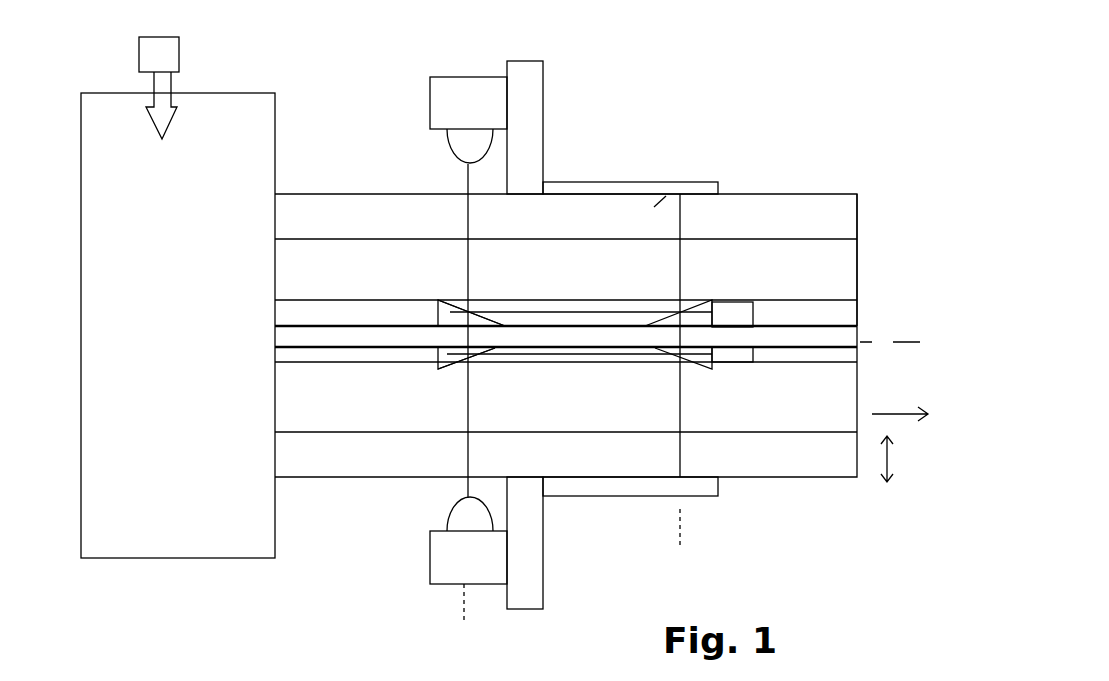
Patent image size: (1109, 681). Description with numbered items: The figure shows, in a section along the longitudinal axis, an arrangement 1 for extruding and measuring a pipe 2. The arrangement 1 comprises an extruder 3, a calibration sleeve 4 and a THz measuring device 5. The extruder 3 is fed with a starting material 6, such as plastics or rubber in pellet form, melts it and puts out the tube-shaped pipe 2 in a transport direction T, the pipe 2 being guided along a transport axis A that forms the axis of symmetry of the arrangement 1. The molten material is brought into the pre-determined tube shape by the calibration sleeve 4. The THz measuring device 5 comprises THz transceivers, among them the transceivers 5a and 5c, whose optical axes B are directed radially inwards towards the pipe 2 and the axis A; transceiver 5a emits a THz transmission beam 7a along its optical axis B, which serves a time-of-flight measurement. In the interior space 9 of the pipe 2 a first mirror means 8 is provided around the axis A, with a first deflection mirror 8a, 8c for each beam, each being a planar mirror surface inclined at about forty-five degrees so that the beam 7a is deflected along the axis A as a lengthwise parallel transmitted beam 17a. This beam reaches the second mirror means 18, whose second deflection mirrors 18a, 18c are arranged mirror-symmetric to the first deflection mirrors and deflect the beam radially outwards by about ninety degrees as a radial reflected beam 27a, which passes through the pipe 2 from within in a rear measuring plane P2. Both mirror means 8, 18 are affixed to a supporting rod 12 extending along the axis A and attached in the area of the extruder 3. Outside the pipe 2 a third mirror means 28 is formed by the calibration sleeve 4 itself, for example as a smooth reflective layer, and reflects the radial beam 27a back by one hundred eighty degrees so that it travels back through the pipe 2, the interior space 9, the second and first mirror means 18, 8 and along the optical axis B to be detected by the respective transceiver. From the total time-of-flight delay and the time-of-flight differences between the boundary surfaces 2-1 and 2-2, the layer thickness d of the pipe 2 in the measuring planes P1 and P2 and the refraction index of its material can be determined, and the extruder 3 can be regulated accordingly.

The arrangement 1 is at (723, 66).
The pipe 2 is at (780, 207).
The boundary surface 2-1 is at (847, 247).
The boundary surface 2-2 is at (830, 198).
The extruder 3 is at (180, 547).
The calibration sleeve 4 is at (597, 183).
The THz measuring device 5 is at (391, 81).
The THz transceiver 5a is at (443, 85).
The THz transceiver 5c is at (435, 580).
The starting material 6 is at (139, 55).
The THz transmission beam 7a is at (468, 217).
The first mirror means 8 is at (425, 398).
The first deflection mirror 8a is at (452, 316).
The first deflection mirror 8c is at (437, 367).
The interior space 9 is at (847, 272).
The supporting rod 12 is at (289, 343).
The lengthwise parallel transmitted beam 17a is at (543, 313).
The second mirror means 18 is at (720, 378).
The second deflection mirror 18a is at (720, 300).
The second deflection mirror 18c is at (723, 368).
The radial reflected beam 27a is at (683, 226).
The third mirror means 28 is at (654, 208).
The transport axis A is at (905, 343).
The optical axis B is at (470, 172).
The transport direction T is at (900, 396).
The layer thickness d is at (905, 459).
The measuring plane P1 is at (462, 621).
The rear measuring plane P2 is at (672, 391).